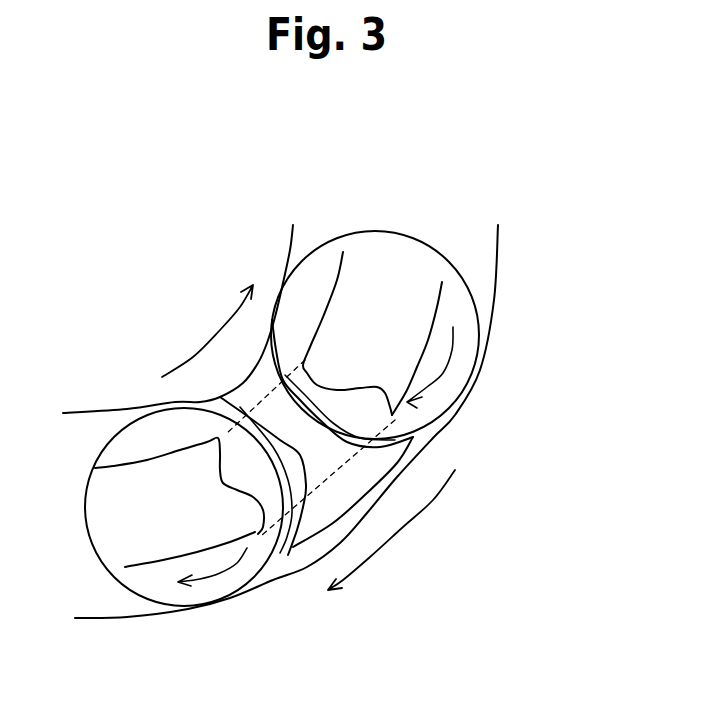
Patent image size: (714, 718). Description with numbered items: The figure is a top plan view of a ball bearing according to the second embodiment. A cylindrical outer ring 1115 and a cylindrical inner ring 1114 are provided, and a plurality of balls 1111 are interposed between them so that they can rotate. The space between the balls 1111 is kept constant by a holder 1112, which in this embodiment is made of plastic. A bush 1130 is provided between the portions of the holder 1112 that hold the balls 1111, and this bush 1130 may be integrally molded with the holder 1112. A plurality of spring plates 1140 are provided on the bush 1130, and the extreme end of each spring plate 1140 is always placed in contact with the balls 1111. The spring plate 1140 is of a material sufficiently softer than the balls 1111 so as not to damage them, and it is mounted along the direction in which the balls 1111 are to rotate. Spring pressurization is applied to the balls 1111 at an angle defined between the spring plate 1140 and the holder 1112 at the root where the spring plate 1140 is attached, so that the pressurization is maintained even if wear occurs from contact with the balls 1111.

The balls 1111 is at (310, 293).
The holder 1112 is at (385, 331).
The inner ring 1114 is at (102, 415).
The outer ring 1115 is at (120, 618).
The bush 1130 is at (355, 483).
The spring plates 1140 is at (267, 347).